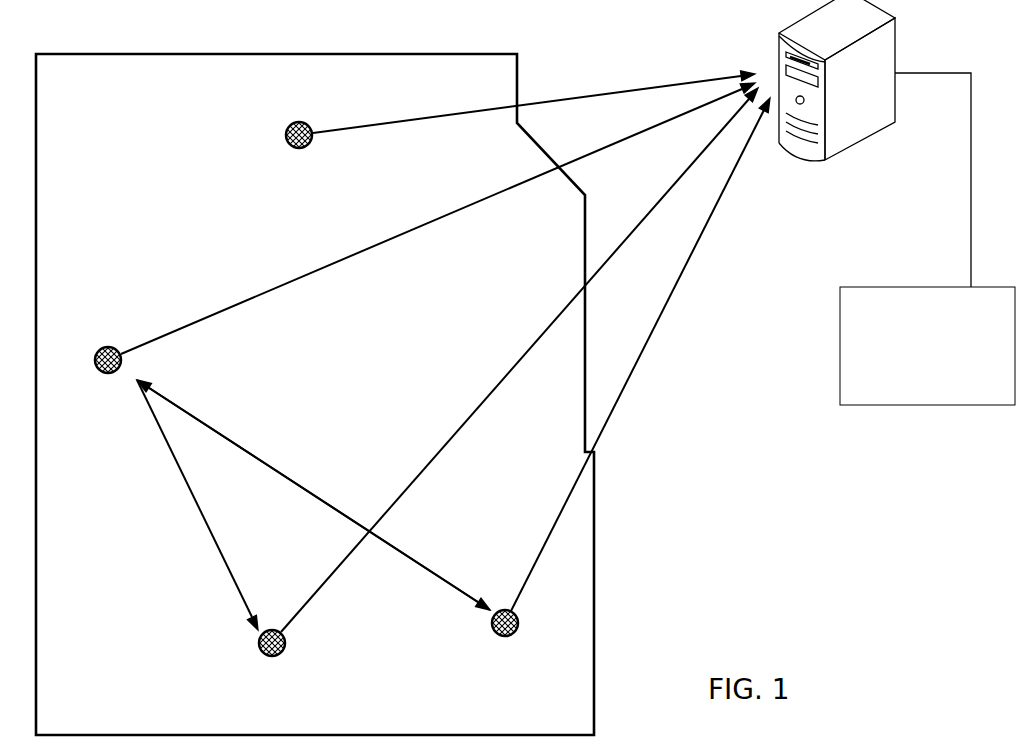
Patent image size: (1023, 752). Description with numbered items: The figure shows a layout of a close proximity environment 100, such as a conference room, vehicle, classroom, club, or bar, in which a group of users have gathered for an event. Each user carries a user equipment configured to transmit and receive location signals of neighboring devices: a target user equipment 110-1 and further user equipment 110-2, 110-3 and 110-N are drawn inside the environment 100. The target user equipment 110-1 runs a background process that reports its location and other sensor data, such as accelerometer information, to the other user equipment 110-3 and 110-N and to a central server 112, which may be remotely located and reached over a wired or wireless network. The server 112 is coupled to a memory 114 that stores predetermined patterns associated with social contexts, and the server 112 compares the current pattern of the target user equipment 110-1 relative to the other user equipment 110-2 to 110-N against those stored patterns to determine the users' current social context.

The close proximity environment 100 is at (315, 394).
The target user equipment 110-1 is at (94, 343).
The user equipment 110-2 is at (272, 125).
The user equipment 110-3 is at (249, 626).
The user equipment 110-N is at (533, 612).
The central server 112 is at (910, 29).
The memory 114 is at (927, 346).